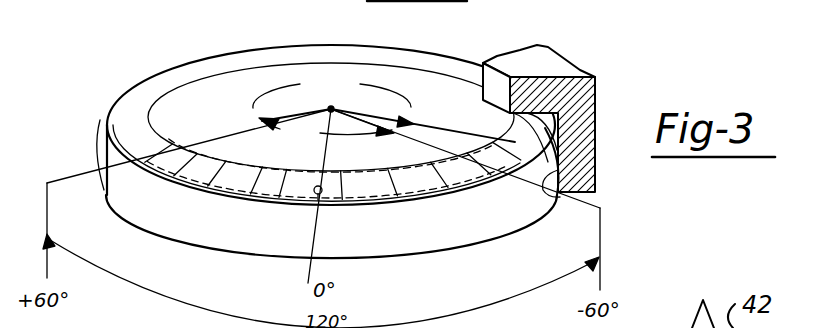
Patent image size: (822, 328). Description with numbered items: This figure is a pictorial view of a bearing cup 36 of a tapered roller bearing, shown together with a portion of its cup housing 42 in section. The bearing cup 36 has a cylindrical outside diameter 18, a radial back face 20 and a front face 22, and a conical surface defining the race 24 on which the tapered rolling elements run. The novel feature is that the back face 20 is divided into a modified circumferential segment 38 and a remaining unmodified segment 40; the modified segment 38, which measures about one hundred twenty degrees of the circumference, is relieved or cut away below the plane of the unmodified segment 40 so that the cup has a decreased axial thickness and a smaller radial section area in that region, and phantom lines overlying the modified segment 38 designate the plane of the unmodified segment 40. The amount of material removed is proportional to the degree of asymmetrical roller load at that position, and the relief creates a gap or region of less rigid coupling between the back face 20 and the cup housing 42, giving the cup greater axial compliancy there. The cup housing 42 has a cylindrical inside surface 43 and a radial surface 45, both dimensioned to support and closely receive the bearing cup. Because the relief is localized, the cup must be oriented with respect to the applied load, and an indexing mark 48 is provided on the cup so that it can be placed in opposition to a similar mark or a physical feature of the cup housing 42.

The cylindrical outside diameter 18 is at (108, 163).
The radial back face 20 is at (134, 100).
The front face 22 is at (153, 228).
The race 24 is at (222, 88).
The bearing cup 36 is at (317, 48).
The modified circumferential segment 38 is at (326, 128).
The unmodified segment 40 is at (364, 84).
The cup housing 42 is at (598, 112).
The cylindrical inside surface 43 is at (560, 197).
The radial surface 45 is at (497, 140).
The indexing mark 48 is at (313, 195).